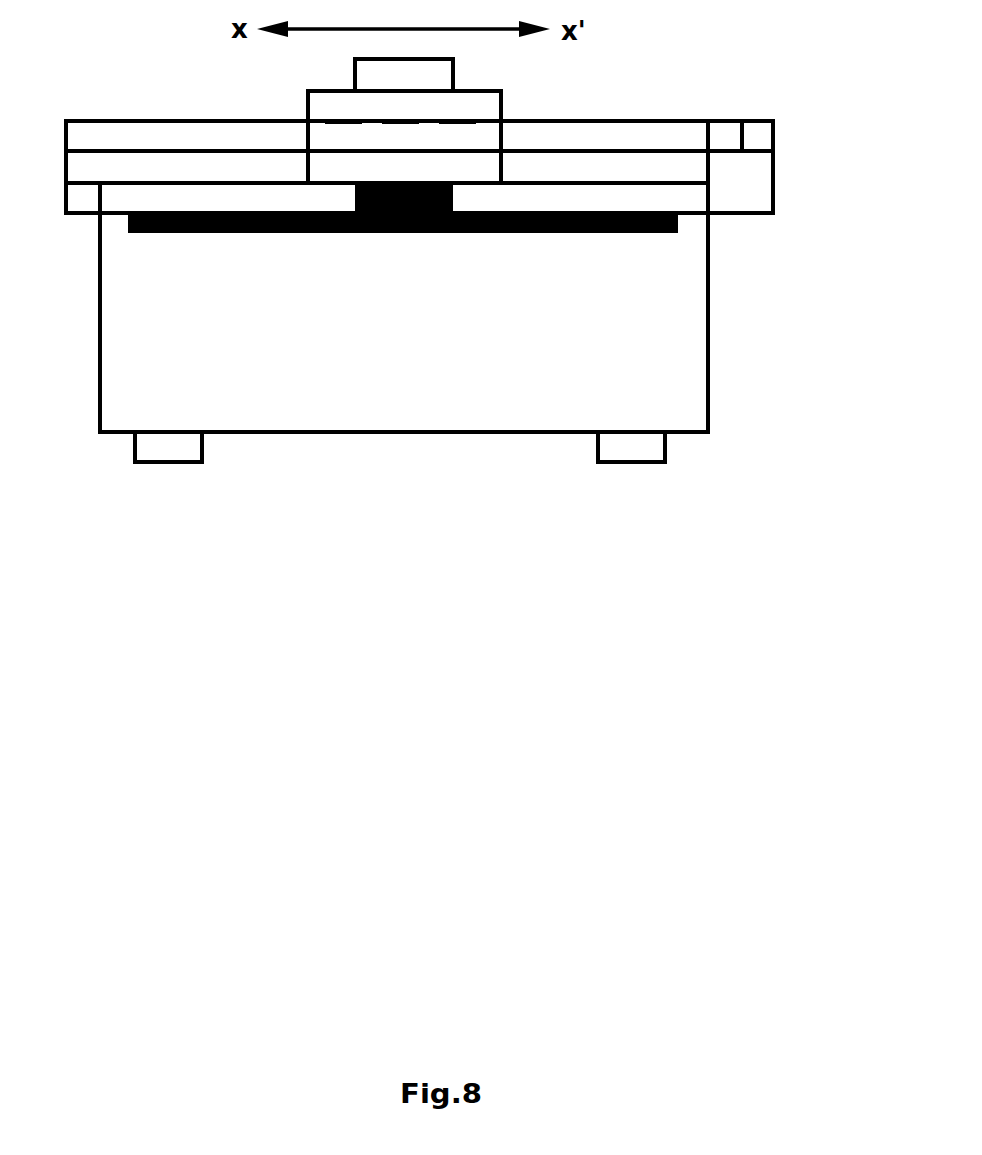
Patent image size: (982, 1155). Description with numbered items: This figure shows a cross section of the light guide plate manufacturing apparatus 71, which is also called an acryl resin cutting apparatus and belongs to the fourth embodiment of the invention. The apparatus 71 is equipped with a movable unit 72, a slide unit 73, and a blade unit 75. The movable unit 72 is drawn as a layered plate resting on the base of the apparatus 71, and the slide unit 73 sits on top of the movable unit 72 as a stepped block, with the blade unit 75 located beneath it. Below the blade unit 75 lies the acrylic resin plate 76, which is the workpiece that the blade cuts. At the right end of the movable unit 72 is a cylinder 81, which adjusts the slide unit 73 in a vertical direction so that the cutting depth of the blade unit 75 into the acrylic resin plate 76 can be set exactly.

The light guide plate manufacturing apparatus 71 is at (458, 291).
The movable unit 72 is at (429, 144).
The slide unit 73 is at (461, 114).
The blade unit 75 is at (451, 244).
The acrylic resin plate 76 is at (350, 255).
The cylinder 81 is at (773, 167).